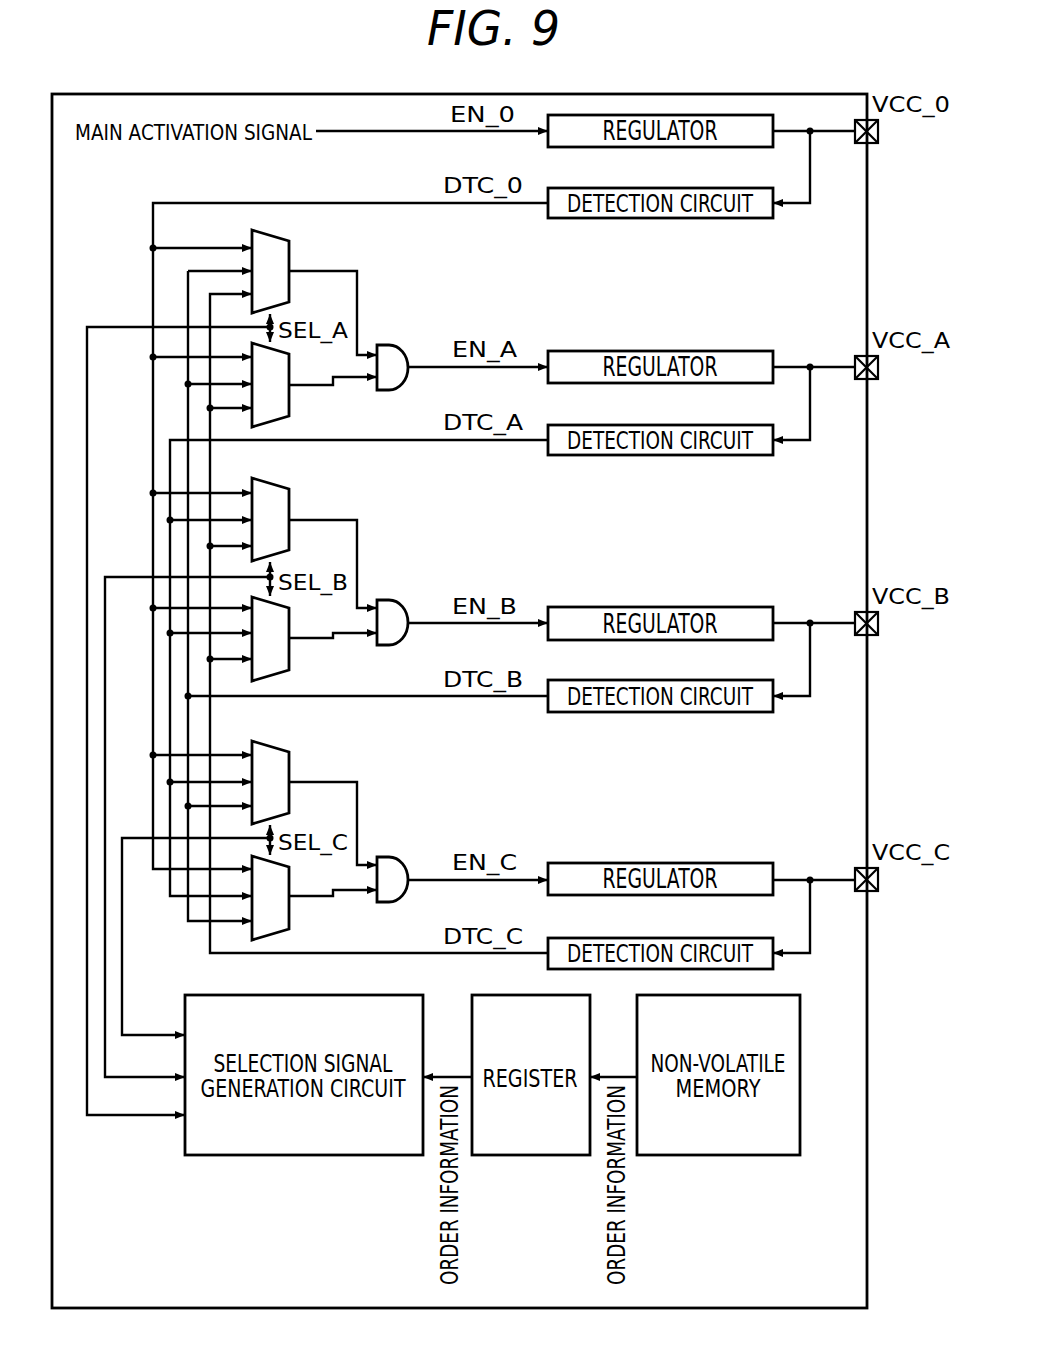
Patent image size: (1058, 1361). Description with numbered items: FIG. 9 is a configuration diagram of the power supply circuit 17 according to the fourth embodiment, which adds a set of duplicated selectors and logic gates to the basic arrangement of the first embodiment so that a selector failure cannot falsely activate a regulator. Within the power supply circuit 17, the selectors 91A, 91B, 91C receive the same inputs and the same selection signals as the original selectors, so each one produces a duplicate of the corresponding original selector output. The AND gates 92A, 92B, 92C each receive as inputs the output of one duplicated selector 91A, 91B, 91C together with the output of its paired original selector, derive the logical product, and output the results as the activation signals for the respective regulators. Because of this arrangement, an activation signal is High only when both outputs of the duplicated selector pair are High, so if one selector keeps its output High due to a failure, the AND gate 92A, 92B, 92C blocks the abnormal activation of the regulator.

The power supply circuit 17 is at (268, 95).
The selector 91A is at (291, 259).
The selector 91B is at (291, 506).
The selector 91C is at (291, 769).
The AND gate 92A is at (393, 344).
The AND gate 92B is at (393, 599).
The AND gate 92C is at (393, 856).